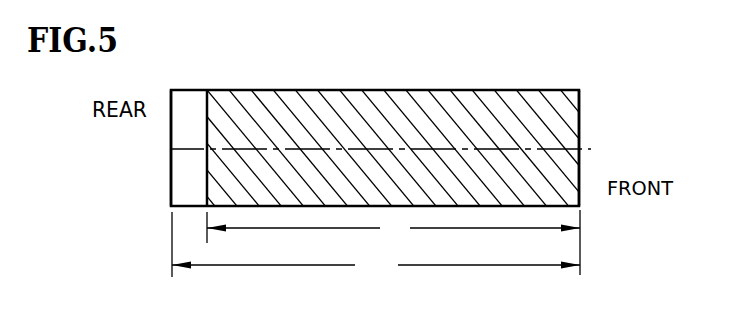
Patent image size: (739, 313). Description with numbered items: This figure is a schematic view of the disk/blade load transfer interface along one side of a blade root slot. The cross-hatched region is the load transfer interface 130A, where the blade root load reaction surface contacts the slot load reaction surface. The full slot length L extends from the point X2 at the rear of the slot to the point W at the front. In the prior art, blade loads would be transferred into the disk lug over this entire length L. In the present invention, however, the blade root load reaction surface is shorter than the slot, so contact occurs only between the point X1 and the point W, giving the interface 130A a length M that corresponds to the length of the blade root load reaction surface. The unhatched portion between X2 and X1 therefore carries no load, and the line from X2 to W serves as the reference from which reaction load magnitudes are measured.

The load transfer interface 130A is at (380, 90).
The point X1 is at (207, 149).
The point X2 is at (173, 149).
The point W is at (580, 149).
The length M is at (393, 227).
The slot length L is at (376, 244).